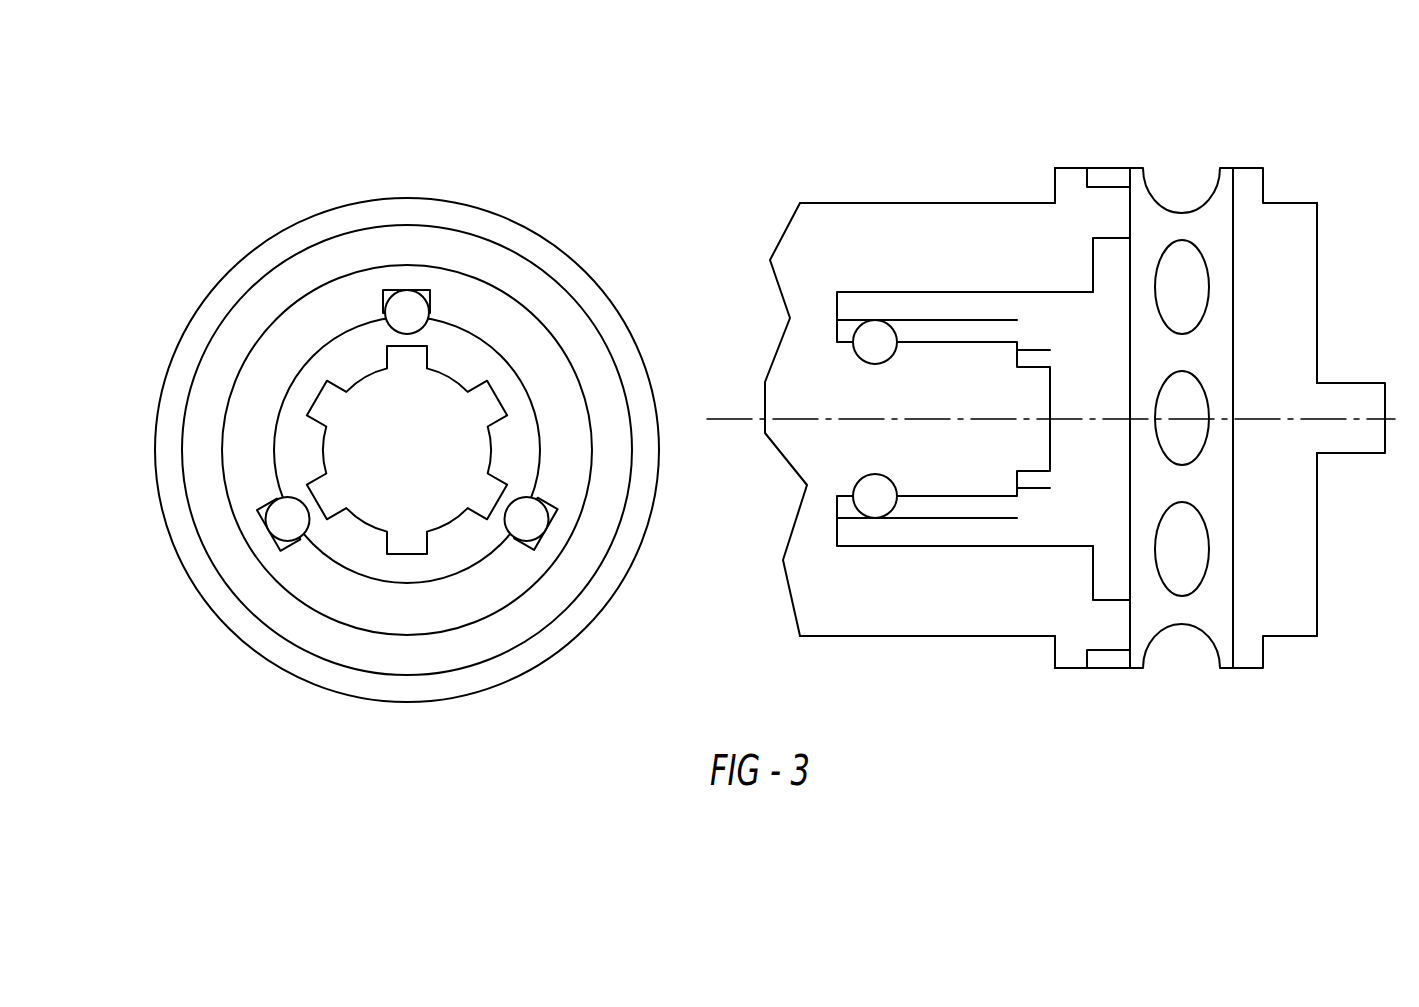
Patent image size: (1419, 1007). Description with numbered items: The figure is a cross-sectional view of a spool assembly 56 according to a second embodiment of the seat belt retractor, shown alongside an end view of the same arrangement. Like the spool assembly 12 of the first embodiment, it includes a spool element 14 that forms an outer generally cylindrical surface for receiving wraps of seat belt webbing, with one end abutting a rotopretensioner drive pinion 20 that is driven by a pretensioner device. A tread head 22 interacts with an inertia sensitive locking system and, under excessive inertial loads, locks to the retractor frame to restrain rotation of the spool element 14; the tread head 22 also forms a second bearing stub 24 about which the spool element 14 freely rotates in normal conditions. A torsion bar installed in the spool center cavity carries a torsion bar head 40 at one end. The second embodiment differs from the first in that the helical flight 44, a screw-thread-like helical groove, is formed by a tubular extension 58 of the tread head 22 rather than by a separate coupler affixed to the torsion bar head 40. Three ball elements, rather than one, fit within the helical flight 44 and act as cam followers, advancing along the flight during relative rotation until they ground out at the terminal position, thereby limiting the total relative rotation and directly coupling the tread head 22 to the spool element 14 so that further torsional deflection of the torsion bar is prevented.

The spool assembly 12 is at (1352, 267).
The spool element 14 is at (1065, 670).
The rotopretensioner drive pinion 20 is at (1165, 195).
The tread head 22 is at (1288, 203).
The second bearing stub 24 is at (1355, 383).
The torsion bar head 40 is at (375, 488).
The helical flight 44 is at (553, 512).
The spool assembly 56 is at (1038, 130).
The tubular extension 58 is at (957, 290).